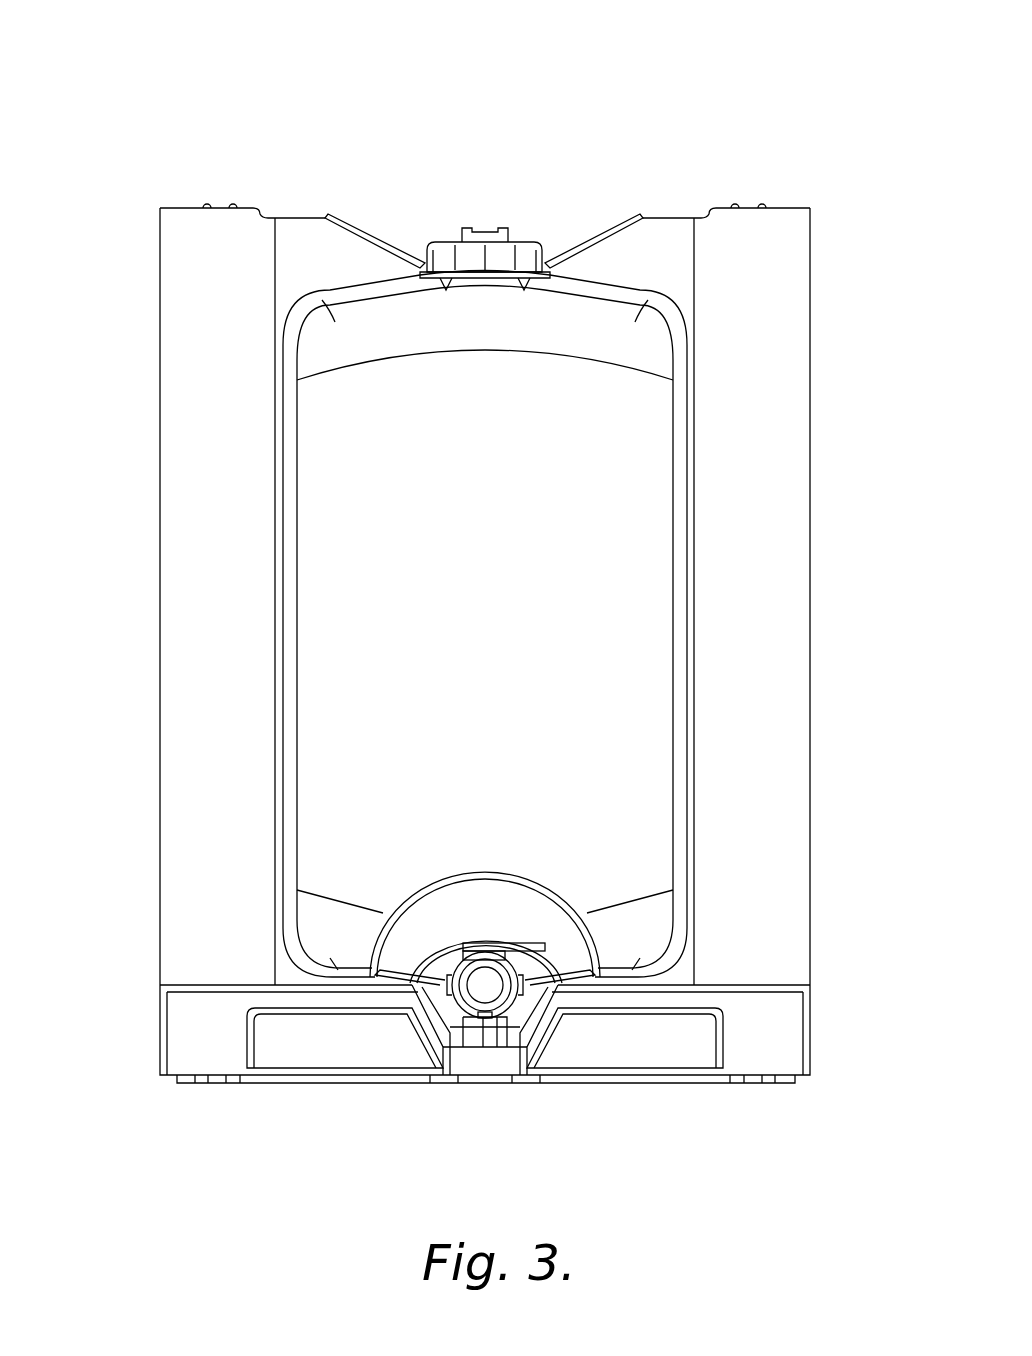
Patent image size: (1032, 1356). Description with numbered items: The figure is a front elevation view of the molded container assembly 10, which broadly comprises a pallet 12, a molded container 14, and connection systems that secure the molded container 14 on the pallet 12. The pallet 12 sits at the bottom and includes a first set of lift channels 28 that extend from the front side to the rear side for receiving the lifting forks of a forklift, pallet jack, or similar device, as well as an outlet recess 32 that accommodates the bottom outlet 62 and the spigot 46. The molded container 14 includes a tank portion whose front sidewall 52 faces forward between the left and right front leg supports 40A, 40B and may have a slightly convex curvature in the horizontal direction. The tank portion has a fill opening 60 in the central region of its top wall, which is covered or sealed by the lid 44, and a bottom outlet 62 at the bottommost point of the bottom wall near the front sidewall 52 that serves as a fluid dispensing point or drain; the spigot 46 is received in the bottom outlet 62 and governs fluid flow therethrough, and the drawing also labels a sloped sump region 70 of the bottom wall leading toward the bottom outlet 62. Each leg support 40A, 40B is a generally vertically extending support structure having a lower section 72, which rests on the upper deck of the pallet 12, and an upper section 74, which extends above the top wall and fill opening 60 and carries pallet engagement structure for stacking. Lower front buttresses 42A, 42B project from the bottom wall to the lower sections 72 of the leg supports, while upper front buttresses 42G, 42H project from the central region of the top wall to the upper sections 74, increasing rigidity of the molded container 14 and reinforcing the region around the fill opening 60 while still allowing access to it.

The molded container assembly 10 is at (660, 75).
The pallet 12 is at (148, 1015).
The molded container 14 is at (150, 617).
The first set of lift channels 28 is at (290, 1058).
The outlet recess 32 is at (497, 1045).
The left front leg support 40A is at (150, 490).
The right front leg support 40B is at (773, 453).
The left front buttress 42A is at (292, 968).
The right front buttress 42B is at (677, 968).
The upper left front buttress 42G is at (332, 242).
The upper right front buttress 42H is at (643, 242).
The lid 44 is at (447, 240).
The spigot 46 is at (487, 995).
The front sidewall 52 is at (633, 637).
The fill opening 60 is at (547, 240).
The bottom outlet 62 is at (510, 1010).
The sump / funnel 70 is at (445, 923).
The lower section 72 is at (150, 805).
The upper section 74 is at (150, 333).